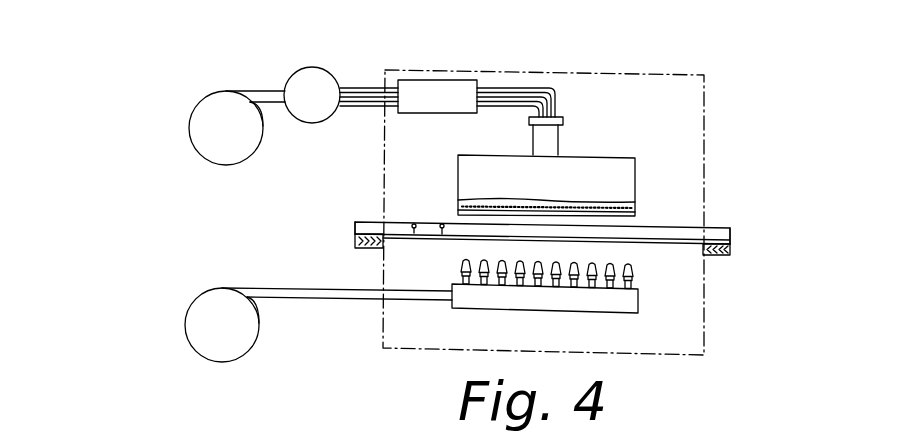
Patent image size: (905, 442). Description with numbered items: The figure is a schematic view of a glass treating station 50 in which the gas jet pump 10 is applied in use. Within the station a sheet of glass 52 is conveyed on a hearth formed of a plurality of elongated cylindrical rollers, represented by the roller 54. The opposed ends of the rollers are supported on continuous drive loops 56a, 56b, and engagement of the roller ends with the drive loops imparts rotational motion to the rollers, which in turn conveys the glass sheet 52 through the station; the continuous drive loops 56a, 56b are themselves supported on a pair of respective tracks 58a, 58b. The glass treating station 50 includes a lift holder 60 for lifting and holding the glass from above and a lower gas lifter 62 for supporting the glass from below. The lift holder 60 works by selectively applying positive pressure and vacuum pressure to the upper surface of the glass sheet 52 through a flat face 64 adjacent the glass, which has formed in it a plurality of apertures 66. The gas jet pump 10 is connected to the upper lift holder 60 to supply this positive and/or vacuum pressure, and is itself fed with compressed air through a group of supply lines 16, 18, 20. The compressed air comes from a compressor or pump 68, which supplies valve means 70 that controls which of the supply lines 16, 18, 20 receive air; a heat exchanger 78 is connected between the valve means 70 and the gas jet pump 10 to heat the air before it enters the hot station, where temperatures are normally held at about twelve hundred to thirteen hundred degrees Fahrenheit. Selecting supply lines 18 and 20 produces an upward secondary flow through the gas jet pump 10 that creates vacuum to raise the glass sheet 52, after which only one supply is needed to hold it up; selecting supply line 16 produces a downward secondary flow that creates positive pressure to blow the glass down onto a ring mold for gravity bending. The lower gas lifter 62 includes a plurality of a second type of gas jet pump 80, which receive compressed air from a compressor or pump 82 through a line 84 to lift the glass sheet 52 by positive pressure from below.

The gas jet pump 10 is at (540, 135).
The supply line 16 is at (489, 88).
The supply line 18 is at (516, 96).
The supply line 20 is at (537, 104).
The glass treating station 50 is at (700, 73).
The sheet of glass 52 is at (632, 223).
The roller 54 is at (674, 238).
The continuous drive loop 56a is at (355, 232).
The continuous drive loop 56b is at (733, 232).
The track 58a is at (355, 242).
The track 58b is at (735, 252).
The lift holder 60 is at (617, 166).
The lower gas lifter 62 is at (612, 300).
The flat face 64 is at (456, 222).
The apertures 66 is at (525, 209).
The compressor or pump 68 is at (200, 118).
The valve means 70 is at (298, 85).
The heat exchanger 78 is at (455, 105).
The second type of gas jet pump 80 is at (457, 266).
The compressor or pump 82 is at (200, 306).
The line 84 is at (315, 298).